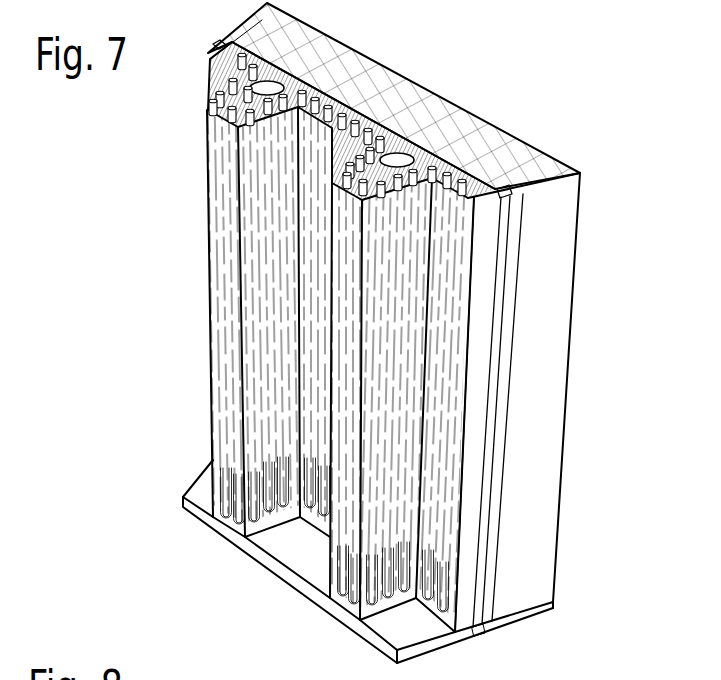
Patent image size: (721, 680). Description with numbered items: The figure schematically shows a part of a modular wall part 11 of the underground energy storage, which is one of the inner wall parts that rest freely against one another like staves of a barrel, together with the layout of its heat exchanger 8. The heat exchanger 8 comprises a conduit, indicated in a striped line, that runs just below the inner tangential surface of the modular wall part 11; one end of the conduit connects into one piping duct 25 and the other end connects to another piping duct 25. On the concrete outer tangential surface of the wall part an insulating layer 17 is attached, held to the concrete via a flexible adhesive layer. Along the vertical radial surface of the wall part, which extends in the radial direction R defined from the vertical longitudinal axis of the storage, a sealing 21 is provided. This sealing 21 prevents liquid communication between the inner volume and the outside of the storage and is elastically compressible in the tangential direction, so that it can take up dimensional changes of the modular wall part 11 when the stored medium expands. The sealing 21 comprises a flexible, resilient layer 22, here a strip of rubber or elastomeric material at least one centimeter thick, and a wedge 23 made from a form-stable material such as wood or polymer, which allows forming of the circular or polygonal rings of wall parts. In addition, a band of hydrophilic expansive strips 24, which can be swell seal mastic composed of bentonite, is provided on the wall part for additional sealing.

The modular wall part 11 is at (578, 292).
The insulating layer 17 is at (431, 108).
The flexible, resilient layer 22 is at (500, 187).
The heat exchanger 8 is at (398, 158).
The piping duct 25 is at (268, 88).
The radial direction R is at (218, 33).
The wedge 23 is at (502, 411).
The hydrophilic expansive strips 24 is at (488, 487).
The sealing 21 is at (501, 636).